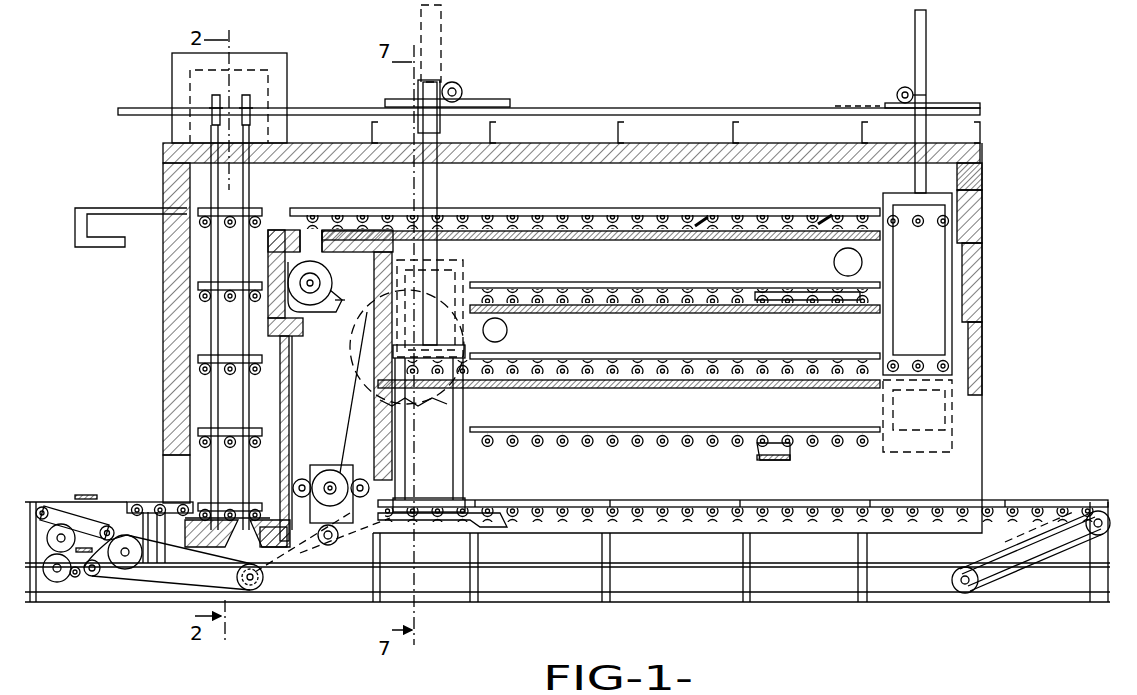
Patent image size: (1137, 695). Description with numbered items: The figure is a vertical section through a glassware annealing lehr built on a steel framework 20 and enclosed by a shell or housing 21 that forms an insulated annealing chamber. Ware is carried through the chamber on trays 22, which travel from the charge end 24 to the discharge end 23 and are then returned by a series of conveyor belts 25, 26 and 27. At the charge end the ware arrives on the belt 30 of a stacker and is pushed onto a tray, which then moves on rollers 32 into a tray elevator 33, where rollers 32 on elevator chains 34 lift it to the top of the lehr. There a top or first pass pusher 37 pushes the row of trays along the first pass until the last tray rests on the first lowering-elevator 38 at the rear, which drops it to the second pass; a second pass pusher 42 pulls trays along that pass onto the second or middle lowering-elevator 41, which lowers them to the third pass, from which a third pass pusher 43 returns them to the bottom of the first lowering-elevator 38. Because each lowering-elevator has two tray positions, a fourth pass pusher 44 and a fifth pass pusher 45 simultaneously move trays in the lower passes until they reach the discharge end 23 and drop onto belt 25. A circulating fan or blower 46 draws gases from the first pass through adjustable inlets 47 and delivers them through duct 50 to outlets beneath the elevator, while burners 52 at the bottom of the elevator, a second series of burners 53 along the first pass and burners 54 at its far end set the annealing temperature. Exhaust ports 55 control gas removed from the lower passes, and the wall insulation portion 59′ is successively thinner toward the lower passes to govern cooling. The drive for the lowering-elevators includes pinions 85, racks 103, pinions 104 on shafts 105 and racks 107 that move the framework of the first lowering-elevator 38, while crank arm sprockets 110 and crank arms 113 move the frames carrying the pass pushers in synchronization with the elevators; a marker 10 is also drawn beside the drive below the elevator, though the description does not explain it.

The drive motor 10 is at (308, 450).
The steel framework 20 is at (742, 128).
The shell or housing 21 is at (983, 433).
The trays 22 is at (196, 358).
The discharge end 23 is at (1083, 480).
The charge end 24 is at (112, 500).
The return conveyor belt 25 is at (1025, 560).
The conveyor belt 26 is at (525, 565).
The conveyor belt 27 is at (210, 556).
The belt 30 is at (86, 494).
The rollers 32 is at (205, 240).
The tray elevator 33 is at (208, 307).
The elevator chains 34 is at (248, 318).
The top or first pass pusher 37 is at (82, 209).
The first lowering-elevator 38 is at (888, 263).
The second or middle lowering-elevator 41 is at (466, 408).
The second pass pusher 42 is at (825, 302).
The third pass pusher 43 is at (372, 318).
The fourth pass pusher 44 is at (795, 447).
The fifth pass pusher 45 is at (485, 512).
The circulating fan or blower 46 is at (560, 235).
The adjustable inlets or dampers 47 is at (705, 228).
The duct 50 is at (305, 336).
The burners 52 is at (265, 572).
The second series of burners 53 is at (165, 163).
The burners 54 is at (983, 172).
The exhaust ports 55 is at (830, 262).
The insulation portion 59′ is at (983, 226).
The pinions 85 is at (463, 88).
The racks 103 is at (888, 103).
The pinions 104 is at (905, 85).
The shafts 105 is at (915, 96).
The racks 107 is at (928, 56).
The crank arm sprockets 110 is at (352, 372).
The crank arms 113 is at (352, 415).